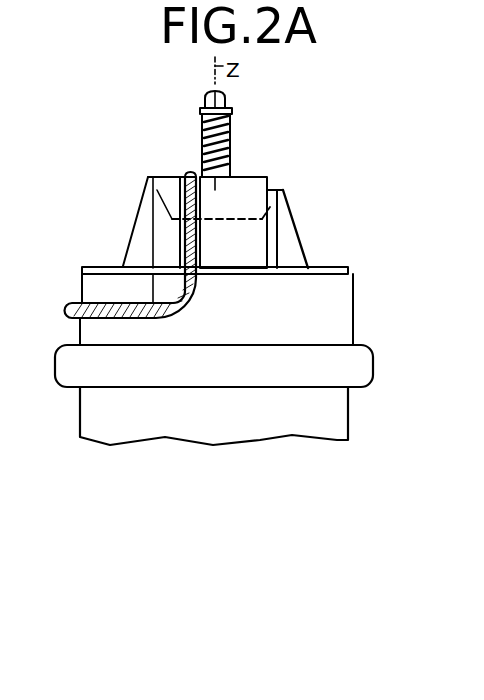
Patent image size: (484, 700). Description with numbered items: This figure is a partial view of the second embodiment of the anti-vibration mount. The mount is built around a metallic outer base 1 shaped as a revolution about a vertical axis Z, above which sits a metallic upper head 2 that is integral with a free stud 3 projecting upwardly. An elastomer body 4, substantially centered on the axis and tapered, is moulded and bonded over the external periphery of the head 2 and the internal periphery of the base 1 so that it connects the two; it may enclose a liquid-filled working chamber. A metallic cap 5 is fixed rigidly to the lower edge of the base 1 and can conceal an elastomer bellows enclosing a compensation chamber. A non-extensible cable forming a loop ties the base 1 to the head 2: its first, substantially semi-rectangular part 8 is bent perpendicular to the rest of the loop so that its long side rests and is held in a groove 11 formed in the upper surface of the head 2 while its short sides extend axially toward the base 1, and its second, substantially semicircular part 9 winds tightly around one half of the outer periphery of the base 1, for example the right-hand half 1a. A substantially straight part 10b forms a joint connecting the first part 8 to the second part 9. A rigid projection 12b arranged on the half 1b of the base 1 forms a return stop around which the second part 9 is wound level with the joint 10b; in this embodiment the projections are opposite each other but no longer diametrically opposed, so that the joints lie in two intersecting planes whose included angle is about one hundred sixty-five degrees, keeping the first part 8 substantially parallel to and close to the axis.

The metallic outer base 1 is at (360, 316).
The right-hand half of the base 1a is at (95, 293).
The half of the base 1b is at (310, 310).
The metallic upper head 2 is at (248, 203).
The free stud 3 is at (228, 123).
The elastomer body 4 is at (240, 250).
The metallic cap 5 is at (320, 417).
The first substantially semi-rectangular part 8 is at (182, 193).
The second substantially semicircular part 9 is at (72, 313).
The substantially straight part 10b is at (182, 305).
The groove 11 is at (183, 175).
The rigid projection 12b is at (165, 290).